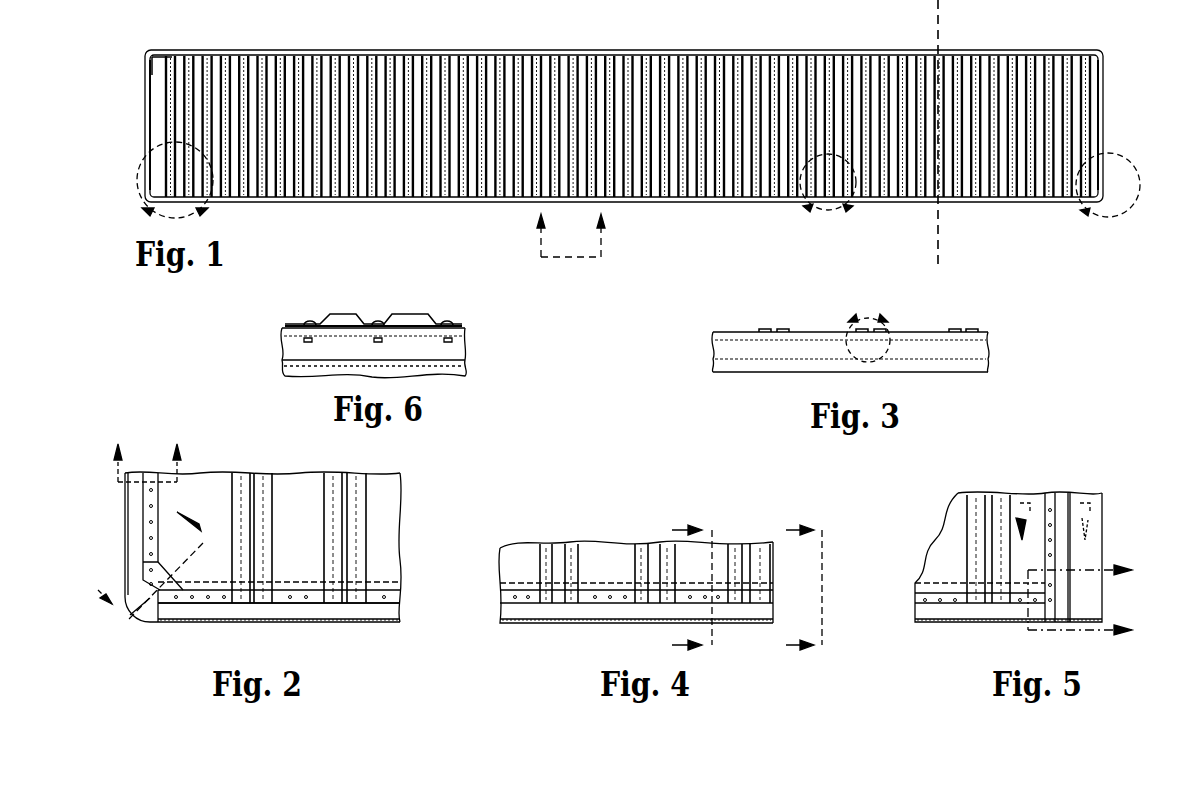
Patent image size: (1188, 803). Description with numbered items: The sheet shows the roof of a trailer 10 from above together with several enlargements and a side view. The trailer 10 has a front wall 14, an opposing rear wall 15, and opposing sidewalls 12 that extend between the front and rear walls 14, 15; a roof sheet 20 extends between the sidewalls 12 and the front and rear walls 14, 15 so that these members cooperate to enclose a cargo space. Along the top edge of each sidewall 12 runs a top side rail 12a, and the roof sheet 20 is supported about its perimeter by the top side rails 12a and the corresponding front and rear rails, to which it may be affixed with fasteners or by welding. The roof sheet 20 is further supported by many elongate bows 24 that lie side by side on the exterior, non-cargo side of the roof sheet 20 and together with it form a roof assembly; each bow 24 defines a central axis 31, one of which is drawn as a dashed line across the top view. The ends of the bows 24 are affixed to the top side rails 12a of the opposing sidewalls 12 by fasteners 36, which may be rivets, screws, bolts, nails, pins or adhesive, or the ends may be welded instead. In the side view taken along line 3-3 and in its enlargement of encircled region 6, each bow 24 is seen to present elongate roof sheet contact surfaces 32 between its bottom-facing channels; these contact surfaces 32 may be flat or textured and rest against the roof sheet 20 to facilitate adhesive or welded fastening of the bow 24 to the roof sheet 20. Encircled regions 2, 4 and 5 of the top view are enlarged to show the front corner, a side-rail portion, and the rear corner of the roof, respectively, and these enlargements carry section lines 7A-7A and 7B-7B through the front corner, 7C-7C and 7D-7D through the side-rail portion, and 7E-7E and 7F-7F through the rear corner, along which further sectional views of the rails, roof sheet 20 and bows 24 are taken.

In FIG. 1, the trailer 10 is at (352, 46).
In FIG. 1, the sidewall 12 is at (405, 52).
In FIG. 6, the sidewall 12 is at (440, 374).
In FIG. 6, the top side rail 12a is at (455, 350).
In FIG. 3, the top side rail 12a is at (975, 350).
In FIG. 1, the front wall 14 is at (147, 97).
In FIG. 1, the rear wall 15 is at (1103, 90).
In FIG. 1, the roof sheet 20 is at (160, 62).
In FIG. 2, the roof sheet 20 is at (310, 536).
In FIG. 4, the roof sheet 20 is at (710, 572).
In FIG. 5, the roof sheet 20 is at (1015, 495).
In FIG. 1, the bow 24 is at (185, 57).
In FIG. 6, the bow 24 is at (405, 314).
In FIG. 3, the bow 24 is at (955, 332).
In FIG. 2, the bow 24 is at (243, 503).
In FIG. 4, the bow 24 is at (640, 545).
In FIG. 5, the bow 24 is at (965, 493).
In FIG. 1, the central axis 31 is at (906, 0).
In FIG. 6, the roof sheet contact surface 32 is at (297, 326).
In FIG. 6, the fastener 36 is at (310, 321).
In FIG. 2, the fastener 36 is at (205, 603).
In FIG. 4, the fastener 36 is at (595, 603).
In FIG. 1, the encircled region 2 is at (175, 187).
In FIG. 1, the line 3- 3 is at (570, 249).
In FIG. 1, the encircled region 4 is at (828, 193).
In FIG. 1, the encircled region 5 is at (1108, 192).
In FIG. 3, the encircled region 6 is at (868, 332).
In FIG. 2, the line 7A- 7A is at (142, 558).
In FIG. 2, the line 7B- 7B is at (145, 451).
In FIG. 4, the line 7C- 7C is at (790, 587).
In FIG. 4, the line 7D- 7D is at (679, 587).
In FIG. 5, the line 7E- 7E is at (1094, 600).
In FIG. 5, the line 7F- 7F is at (1055, 534).